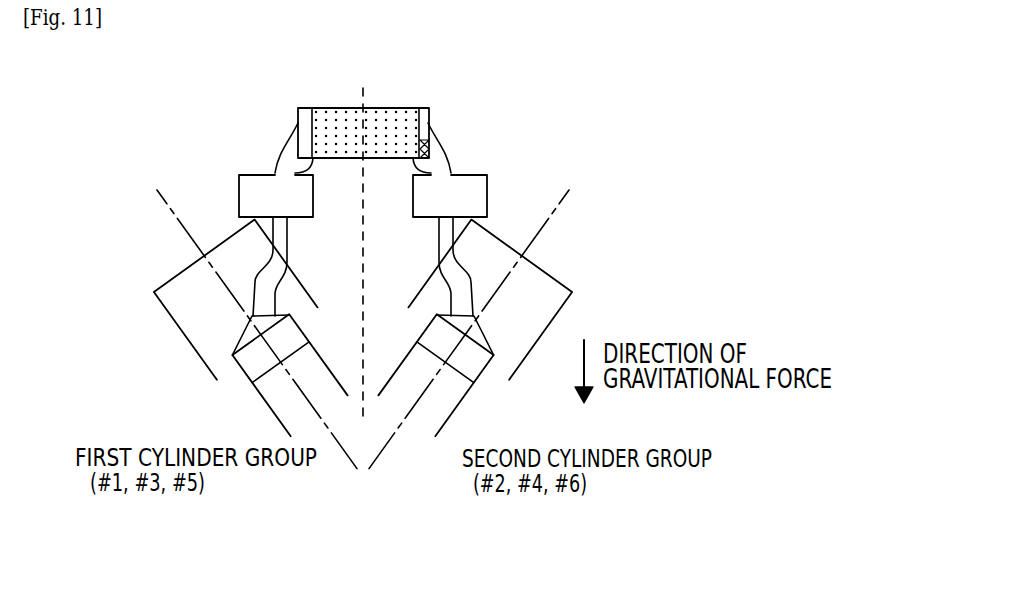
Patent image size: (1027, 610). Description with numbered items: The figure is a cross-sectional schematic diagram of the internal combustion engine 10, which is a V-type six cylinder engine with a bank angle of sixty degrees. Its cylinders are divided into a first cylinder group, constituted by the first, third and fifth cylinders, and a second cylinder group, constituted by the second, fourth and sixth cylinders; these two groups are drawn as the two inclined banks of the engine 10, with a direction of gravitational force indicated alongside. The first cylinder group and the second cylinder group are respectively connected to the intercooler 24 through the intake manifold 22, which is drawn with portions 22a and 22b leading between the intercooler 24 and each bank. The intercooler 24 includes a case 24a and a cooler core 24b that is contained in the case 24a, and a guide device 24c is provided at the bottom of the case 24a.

The internal combustion engine 10 is at (374, 493).
The intake manifold 22 is at (200, 174).
The upstream intake passage portion 22a is at (258, 175).
The downstream intake passage portion 22b is at (288, 248).
The intercooler 24 is at (388, 97).
The case 24a is at (305, 107).
The cooler core 24b is at (337, 120).
The guide device 24c is at (425, 140).